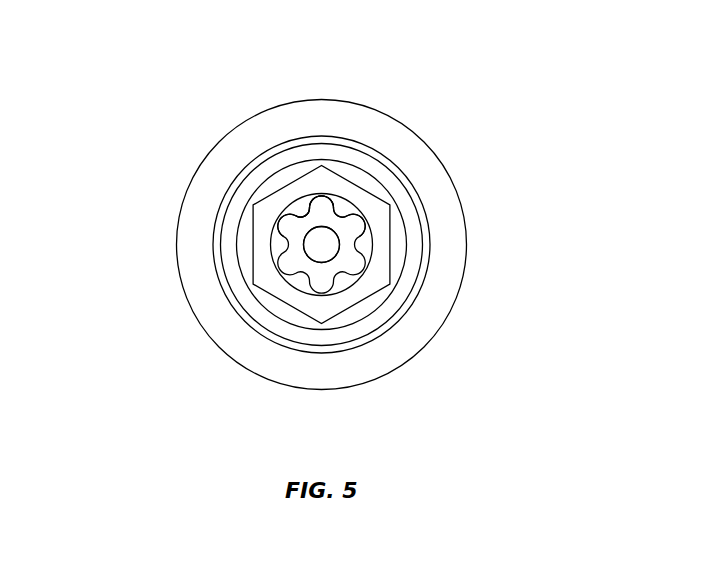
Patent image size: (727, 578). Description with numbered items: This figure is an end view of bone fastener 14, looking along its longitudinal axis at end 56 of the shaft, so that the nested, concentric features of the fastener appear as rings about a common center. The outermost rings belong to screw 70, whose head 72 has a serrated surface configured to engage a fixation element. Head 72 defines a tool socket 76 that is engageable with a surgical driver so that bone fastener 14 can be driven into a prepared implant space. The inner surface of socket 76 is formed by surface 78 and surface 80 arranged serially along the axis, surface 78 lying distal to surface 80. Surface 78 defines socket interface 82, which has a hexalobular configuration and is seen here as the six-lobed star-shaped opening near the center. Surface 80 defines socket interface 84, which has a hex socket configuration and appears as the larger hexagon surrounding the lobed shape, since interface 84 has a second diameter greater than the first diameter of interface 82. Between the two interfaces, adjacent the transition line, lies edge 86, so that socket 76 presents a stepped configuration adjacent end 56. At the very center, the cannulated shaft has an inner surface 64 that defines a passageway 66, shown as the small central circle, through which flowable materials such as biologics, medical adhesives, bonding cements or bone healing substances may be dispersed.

The bone fastener 14 is at (484, 48).
The end 56 is at (349, 208).
The inner surface 64 is at (337, 235).
The passageway 66 is at (332, 247).
The screw 70 is at (207, 175).
The head 72 is at (191, 215).
The tool socket 76 is at (366, 243).
The surface 78 is at (332, 202).
The surface 80 is at (298, 193).
The socket interface 82 is at (320, 195).
The socket interface 84 is at (279, 200).
The edge 86 is at (266, 268).